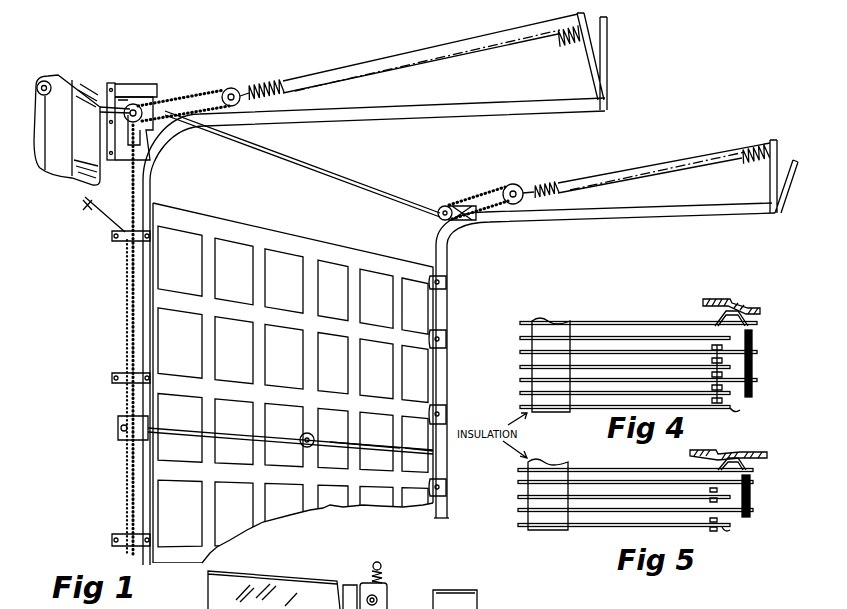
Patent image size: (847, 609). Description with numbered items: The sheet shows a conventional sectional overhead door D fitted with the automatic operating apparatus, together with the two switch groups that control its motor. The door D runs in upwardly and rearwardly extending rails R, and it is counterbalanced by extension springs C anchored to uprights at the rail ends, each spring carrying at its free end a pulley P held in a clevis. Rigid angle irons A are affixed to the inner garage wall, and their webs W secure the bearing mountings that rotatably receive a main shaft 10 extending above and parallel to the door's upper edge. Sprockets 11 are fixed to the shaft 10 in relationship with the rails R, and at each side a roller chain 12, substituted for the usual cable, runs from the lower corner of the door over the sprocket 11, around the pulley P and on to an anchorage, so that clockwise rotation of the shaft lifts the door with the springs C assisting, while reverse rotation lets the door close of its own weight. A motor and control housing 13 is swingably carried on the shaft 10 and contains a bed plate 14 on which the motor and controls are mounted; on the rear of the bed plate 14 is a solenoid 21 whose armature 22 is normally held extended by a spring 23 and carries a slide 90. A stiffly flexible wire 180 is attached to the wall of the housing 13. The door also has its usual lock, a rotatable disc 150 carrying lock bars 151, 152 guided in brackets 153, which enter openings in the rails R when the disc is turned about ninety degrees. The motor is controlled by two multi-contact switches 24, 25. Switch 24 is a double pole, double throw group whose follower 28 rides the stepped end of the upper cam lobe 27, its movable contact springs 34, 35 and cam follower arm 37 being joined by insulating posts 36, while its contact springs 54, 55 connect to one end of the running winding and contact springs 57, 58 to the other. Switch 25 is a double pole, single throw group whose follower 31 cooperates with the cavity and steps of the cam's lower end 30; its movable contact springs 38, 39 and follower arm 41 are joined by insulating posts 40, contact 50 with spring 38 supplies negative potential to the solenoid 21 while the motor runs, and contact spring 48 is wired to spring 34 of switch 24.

In FIG. 1, the main shaft 10 is at (350, 174).
In FIG. 1, the sprocket 11 is at (153, 107).
In FIG. 1, the roller chain 12 is at (197, 93).
In FIG. 1, the motor and control housing 13 is at (51, 181).
In FIG. 1, the bed plate 14 is at (213, 600).
In FIG. 1, the solenoid 21 is at (445, 599).
In FIG. 1, the armature 22 is at (385, 595).
In FIG. 1, the spring 23 is at (383, 570).
In FIG. 4, the multi-contact switch 24 is at (600, 313).
In FIG. 5, the multi-contact switch 25 is at (612, 461).
In FIG. 4, the upper lobe 27 is at (713, 300).
In FIG. 4, the follower 28 is at (747, 318).
In FIG. 5, the lower end 30 is at (717, 452).
In FIG. 5, the follower 31 is at (740, 464).
In FIG. 4, the movable contact spring 34 is at (667, 395).
In FIG. 4, the movable contact spring 35 is at (663, 349).
In FIG. 4, the insulating post 36 is at (754, 347).
In FIG. 4, the cam follower arm 37 is at (633, 326).
In FIG. 5, the movable contact spring 38 is at (600, 514).
In FIG. 5, the movable contact spring 39 is at (643, 484).
In FIG. 5, the insulating post 40 is at (752, 480).
In FIG. 5, the cam follower arm 41 is at (630, 470).
In FIG. 5, the contact spring 48 is at (590, 502).
In FIG. 5, the contact 50 is at (717, 530).
In FIG. 4, the contact spring 54 is at (733, 412).
In FIG. 4, the contact spring 55 is at (643, 341).
In FIG. 4, the contact spring 57 is at (610, 382).
In FIG. 4, the contact spring 58 is at (593, 370).
In FIG. 1, the slide 90 is at (356, 586).
In FIG. 1, the rotatable disc 150 is at (311, 436).
In FIG. 1, the lock bar 151 is at (255, 431).
In FIG. 1, the lock bar 152 is at (374, 436).
In FIG. 1, the bracket 153 is at (430, 447).
In FIG. 1, the stiffly flexible wire 180 is at (127, 323).
In FIG. 1, the angle iron A is at (131, 88).
In FIG. 1, the web W is at (133, 87).
In FIG. 1, the pulley P is at (234, 89).
In FIG. 1, the extension spring C is at (362, 63).
In FIG. 1, the rail R is at (152, 201).
In FIG. 1, the overhead door D is at (160, 508).